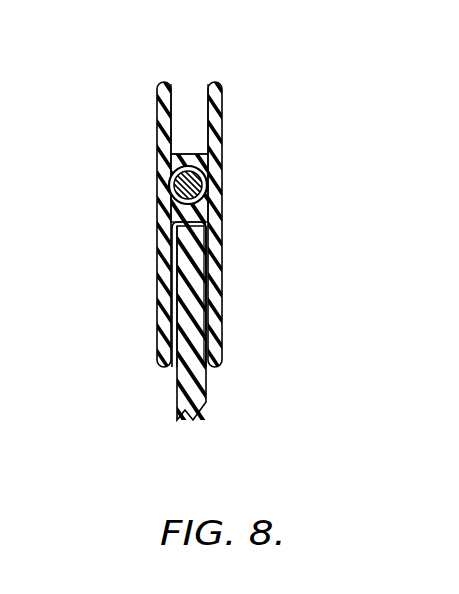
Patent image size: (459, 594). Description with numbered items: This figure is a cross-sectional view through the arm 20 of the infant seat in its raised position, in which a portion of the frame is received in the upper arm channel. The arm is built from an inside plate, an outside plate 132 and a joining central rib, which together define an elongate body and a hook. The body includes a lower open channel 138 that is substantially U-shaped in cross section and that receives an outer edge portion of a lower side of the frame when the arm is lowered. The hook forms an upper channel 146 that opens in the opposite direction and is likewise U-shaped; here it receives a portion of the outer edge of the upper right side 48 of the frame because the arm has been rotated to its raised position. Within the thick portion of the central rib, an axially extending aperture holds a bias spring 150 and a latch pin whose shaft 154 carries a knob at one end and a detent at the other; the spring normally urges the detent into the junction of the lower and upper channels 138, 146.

The right arm 20 is at (222, 136).
The upper right side 48 is at (206, 395).
The outside plate 132 is at (158, 330).
The open channel 138 is at (190, 90).
The upper channel 146 is at (168, 258).
The bias spring 150 is at (208, 194).
The shaft 154 is at (203, 179).